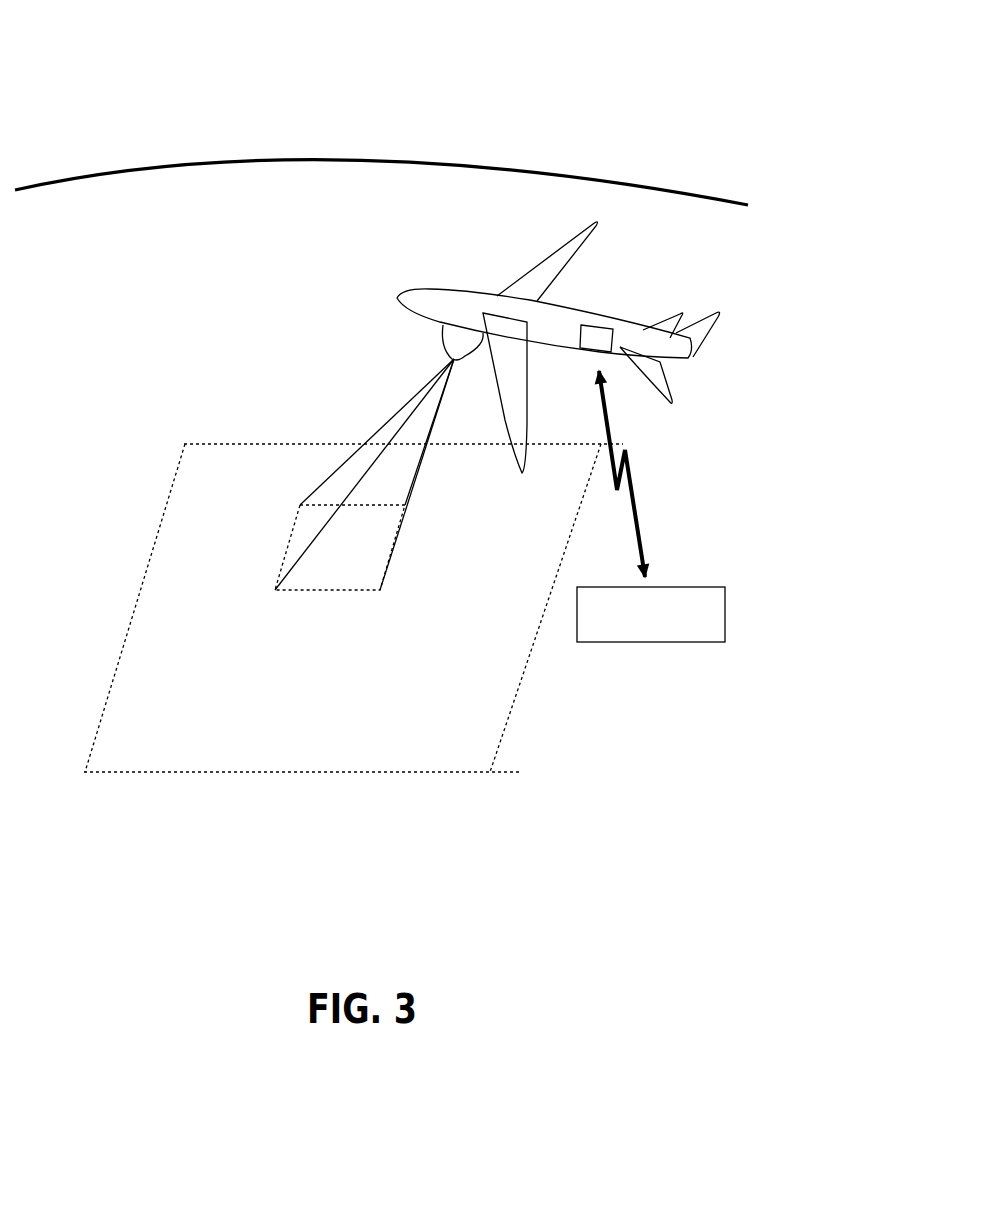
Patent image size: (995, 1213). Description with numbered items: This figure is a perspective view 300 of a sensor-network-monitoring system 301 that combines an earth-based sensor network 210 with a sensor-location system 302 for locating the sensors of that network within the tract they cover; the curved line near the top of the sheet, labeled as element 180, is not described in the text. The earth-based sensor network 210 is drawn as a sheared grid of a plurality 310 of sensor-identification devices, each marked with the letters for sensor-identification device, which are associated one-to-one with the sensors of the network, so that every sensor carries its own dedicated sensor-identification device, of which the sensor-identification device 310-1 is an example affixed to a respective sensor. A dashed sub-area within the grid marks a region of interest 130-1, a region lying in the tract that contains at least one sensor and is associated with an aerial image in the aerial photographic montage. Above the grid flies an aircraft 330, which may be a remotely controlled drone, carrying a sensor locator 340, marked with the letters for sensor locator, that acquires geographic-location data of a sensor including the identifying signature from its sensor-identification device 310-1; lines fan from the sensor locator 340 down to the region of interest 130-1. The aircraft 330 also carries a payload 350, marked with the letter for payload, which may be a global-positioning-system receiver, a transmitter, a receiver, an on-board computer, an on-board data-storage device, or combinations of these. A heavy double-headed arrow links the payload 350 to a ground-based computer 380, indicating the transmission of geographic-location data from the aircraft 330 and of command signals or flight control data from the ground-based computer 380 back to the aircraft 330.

The perspective view 300 is at (130, 84).
The earth surface / horizon 180 is at (567, 158).
The sensor-network-monitoring system 301 is at (214, 254).
The sensor-location system 302 is at (359, 299).
The aircraft 330 is at (485, 297).
The sensor locator 340 is at (458, 353).
The payload 350 is at (612, 335).
The ground-based computer 380 is at (659, 591).
The earth-based sensor network 210 is at (352, 555).
The plurality of sensor-identification devices 310 is at (212, 418).
The sensor-identification device 310-1 is at (371, 552).
The region of interest 130-1 is at (294, 505).